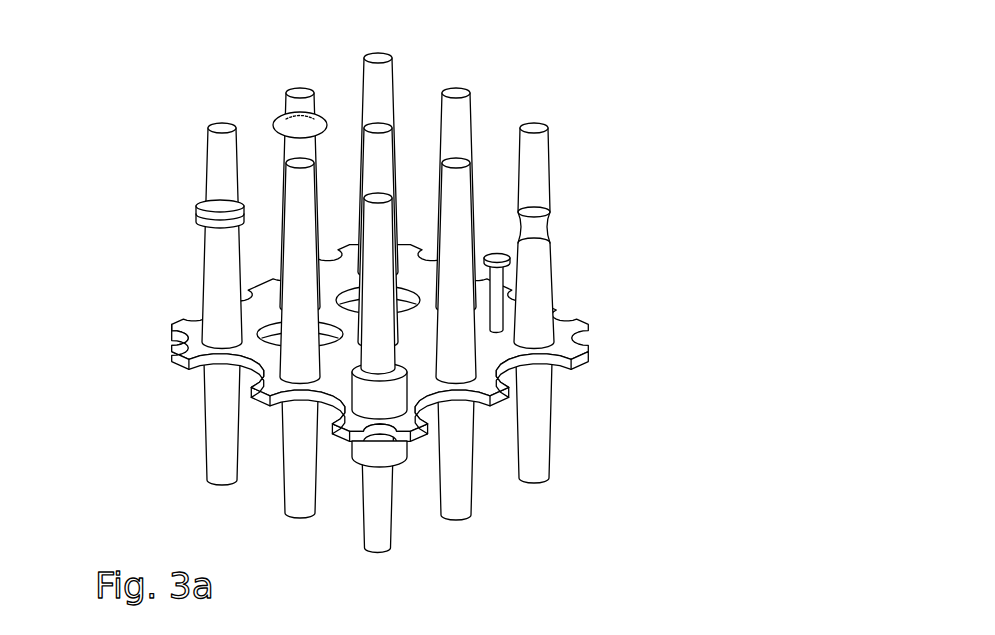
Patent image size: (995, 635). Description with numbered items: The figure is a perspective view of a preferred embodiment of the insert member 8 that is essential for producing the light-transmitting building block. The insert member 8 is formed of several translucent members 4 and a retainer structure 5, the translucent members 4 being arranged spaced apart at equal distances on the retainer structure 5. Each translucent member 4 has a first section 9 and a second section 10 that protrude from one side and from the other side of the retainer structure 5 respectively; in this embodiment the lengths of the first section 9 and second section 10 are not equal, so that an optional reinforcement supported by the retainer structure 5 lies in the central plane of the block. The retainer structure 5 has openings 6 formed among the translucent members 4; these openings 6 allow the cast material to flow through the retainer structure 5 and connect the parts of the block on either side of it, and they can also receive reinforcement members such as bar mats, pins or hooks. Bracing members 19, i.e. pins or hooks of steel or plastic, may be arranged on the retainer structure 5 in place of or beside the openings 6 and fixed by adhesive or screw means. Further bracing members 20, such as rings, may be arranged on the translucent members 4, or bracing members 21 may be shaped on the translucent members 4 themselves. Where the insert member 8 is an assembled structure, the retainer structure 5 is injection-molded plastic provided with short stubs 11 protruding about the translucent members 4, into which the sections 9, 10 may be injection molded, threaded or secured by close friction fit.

The translucent member 4 is at (602, 215).
The retainer structure 5 is at (567, 345).
The opening 6 is at (410, 372).
The insert member 8 is at (359, 292).
The first section 9 is at (553, 273).
The second section 10 is at (553, 408).
The short stub 11 is at (459, 465).
The bracing member 19 is at (492, 250).
The bracing member 20 is at (197, 215).
The bracing member 21 is at (283, 125).